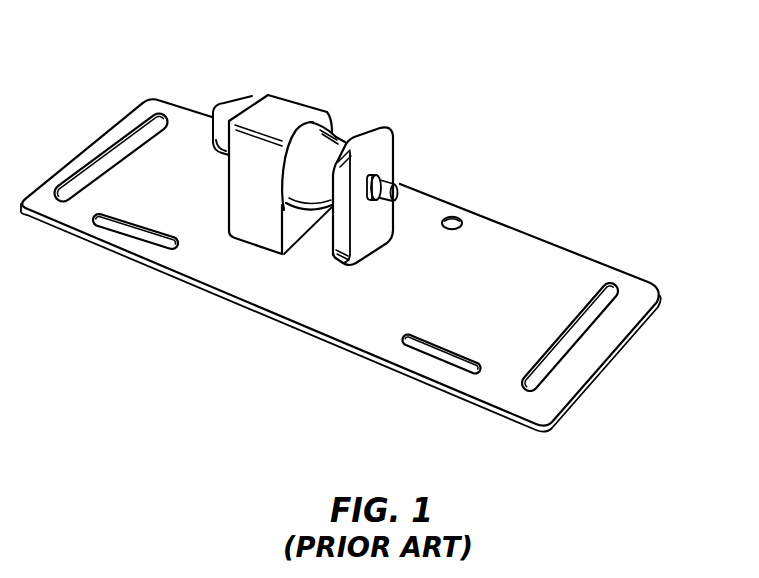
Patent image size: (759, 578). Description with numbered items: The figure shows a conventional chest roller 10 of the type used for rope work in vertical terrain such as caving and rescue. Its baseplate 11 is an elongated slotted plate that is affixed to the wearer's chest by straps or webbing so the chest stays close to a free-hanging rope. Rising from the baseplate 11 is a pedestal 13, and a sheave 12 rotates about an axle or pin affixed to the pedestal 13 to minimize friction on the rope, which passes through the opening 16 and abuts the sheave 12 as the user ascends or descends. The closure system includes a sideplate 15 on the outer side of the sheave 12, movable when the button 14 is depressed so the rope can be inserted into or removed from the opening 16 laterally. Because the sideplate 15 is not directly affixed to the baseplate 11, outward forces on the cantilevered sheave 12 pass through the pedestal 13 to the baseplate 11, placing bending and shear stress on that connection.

The chest roller 10 is at (562, 102).
The baseplate 11 is at (553, 265).
The sheave 12 is at (325, 152).
The pedestal 13 is at (273, 122).
The button 14 is at (400, 187).
The sideplate 15 is at (360, 238).
The opening 16 is at (320, 242).